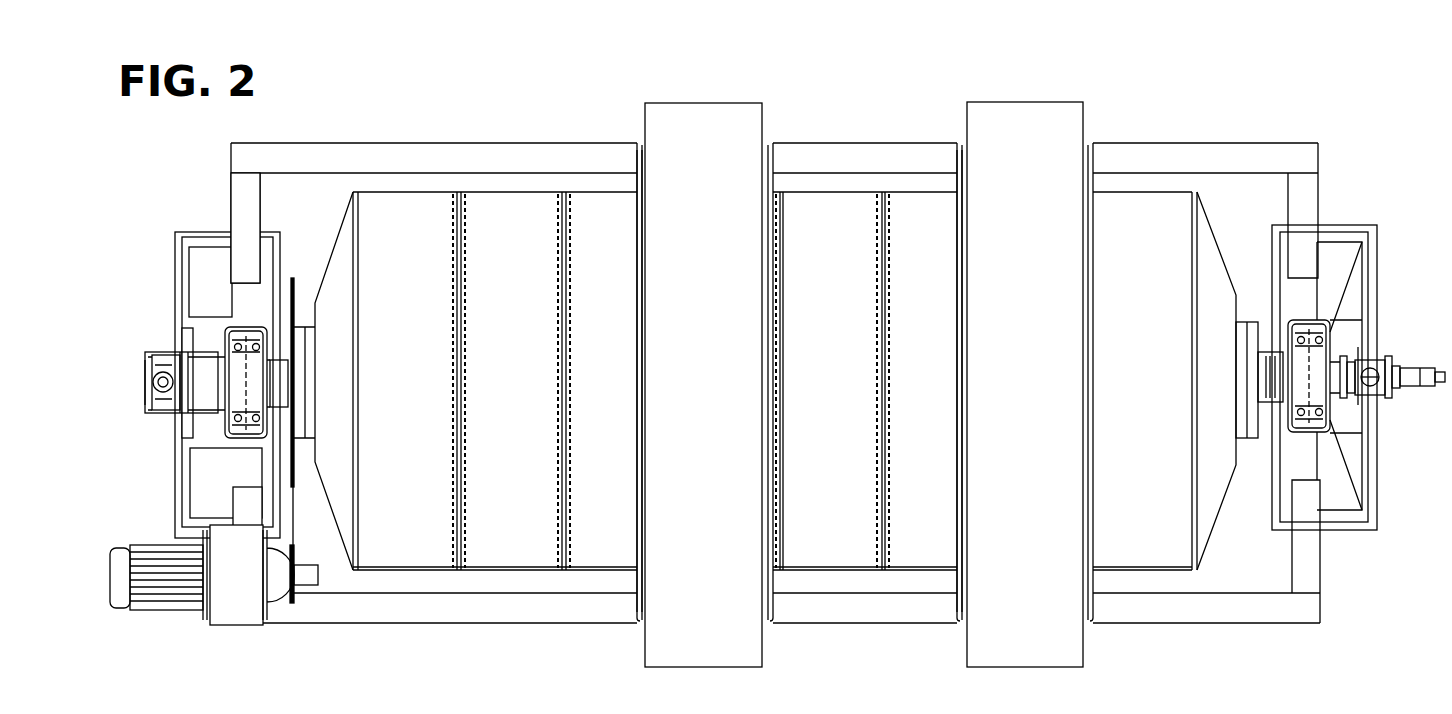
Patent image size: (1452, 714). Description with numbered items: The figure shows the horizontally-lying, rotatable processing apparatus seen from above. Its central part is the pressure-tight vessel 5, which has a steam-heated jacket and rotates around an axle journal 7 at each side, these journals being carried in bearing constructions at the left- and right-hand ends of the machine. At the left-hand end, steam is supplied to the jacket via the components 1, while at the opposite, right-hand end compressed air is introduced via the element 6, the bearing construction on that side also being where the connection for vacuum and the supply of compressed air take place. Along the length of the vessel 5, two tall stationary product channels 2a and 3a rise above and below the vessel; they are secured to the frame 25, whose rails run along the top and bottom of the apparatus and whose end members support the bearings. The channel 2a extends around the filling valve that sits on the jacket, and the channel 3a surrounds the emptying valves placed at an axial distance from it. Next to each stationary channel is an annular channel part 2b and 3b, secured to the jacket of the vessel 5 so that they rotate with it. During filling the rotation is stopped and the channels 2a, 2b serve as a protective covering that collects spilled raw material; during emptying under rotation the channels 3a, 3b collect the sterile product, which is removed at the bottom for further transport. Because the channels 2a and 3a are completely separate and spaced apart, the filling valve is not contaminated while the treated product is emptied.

The frame 25 is at (348, 153).
The pressure-tight vessel 5 is at (510, 215).
The stationary product channel 2a is at (692, 103).
The stationary product channel 3a is at (1022, 102).
The annular channel part 2b is at (637, 228).
The annular channel part 3b is at (962, 228).
The axle journal 7 is at (283, 380).
The steam supply components 1 is at (143, 372).
The compressed air element 6 is at (1422, 368).